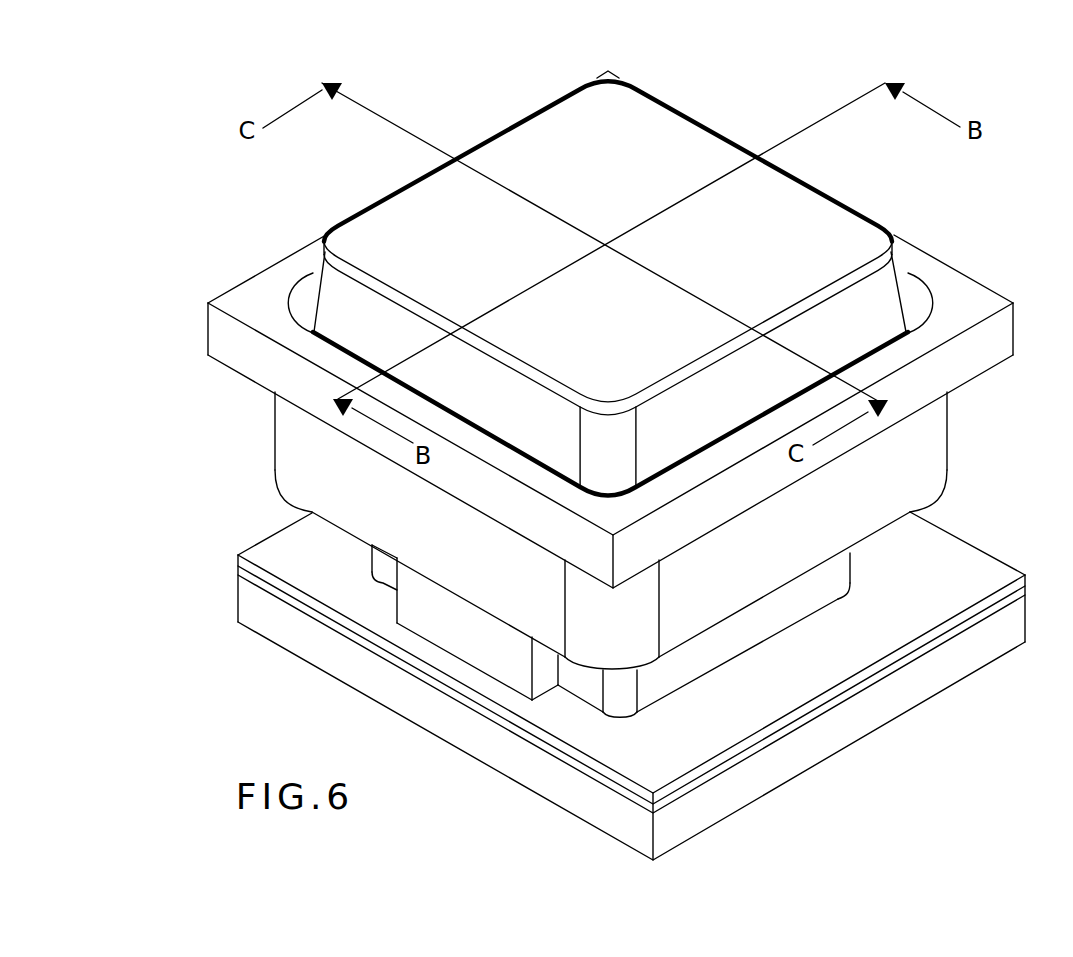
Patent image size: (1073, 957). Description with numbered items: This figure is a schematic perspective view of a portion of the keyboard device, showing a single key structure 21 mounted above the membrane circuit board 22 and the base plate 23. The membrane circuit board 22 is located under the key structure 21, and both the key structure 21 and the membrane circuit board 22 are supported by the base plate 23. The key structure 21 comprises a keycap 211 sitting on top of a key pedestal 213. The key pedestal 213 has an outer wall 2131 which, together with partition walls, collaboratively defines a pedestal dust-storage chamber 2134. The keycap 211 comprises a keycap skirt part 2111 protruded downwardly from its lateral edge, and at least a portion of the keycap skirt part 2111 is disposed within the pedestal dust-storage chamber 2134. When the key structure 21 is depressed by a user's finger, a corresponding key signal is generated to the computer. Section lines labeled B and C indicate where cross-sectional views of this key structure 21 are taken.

The key structure 21 is at (497, 104).
The keycap 211 is at (666, 126).
The keycap skirt part 2111 is at (876, 305).
The key pedestal 213 is at (222, 340).
The outer wall 2131 is at (933, 462).
The pedestal dust-storage chamber 2134 is at (305, 305).
The membrane circuit board 22 is at (975, 618).
The base plate 23 is at (930, 678).